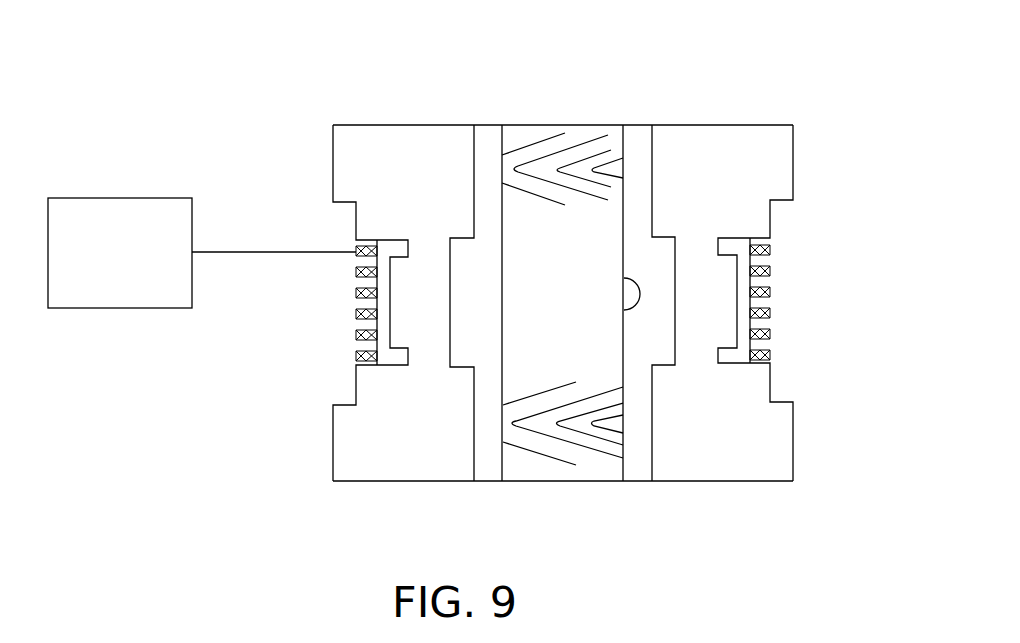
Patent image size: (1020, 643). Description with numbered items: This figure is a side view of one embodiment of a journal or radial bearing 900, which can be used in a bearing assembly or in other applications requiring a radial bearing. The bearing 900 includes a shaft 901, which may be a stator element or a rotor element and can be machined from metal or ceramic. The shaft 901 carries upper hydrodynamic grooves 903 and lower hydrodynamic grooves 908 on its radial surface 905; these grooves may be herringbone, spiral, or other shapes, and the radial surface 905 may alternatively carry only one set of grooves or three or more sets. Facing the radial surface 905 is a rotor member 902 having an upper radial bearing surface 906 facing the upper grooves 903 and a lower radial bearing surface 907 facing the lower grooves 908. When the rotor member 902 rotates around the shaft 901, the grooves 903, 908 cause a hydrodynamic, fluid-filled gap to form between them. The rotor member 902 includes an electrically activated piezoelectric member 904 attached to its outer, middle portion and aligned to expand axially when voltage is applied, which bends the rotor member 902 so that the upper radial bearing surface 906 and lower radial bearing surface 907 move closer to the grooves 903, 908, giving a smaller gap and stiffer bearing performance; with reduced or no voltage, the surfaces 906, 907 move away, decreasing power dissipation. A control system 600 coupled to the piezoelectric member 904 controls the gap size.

The control system 600 is at (120, 196).
The journal or radial bearing 900 is at (818, 90).
The shaft 901 is at (518, 470).
The rotor member 902 is at (783, 155).
The upper hydrodynamic grooves 903 is at (551, 150).
The piezoelectric member 904 is at (764, 325).
The radial surface 905 is at (625, 306).
The upper radial bearing surface 906 is at (650, 187).
The lower radial bearing surface 907 is at (652, 452).
The lower hydrodynamic grooves 908 is at (560, 442).